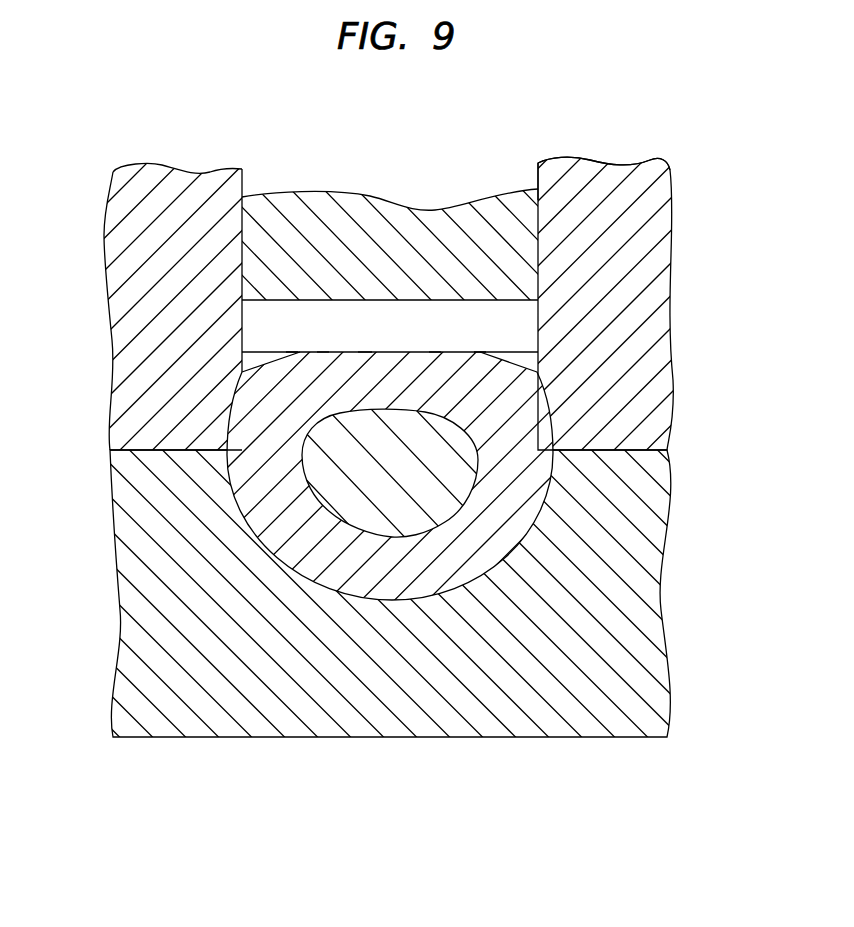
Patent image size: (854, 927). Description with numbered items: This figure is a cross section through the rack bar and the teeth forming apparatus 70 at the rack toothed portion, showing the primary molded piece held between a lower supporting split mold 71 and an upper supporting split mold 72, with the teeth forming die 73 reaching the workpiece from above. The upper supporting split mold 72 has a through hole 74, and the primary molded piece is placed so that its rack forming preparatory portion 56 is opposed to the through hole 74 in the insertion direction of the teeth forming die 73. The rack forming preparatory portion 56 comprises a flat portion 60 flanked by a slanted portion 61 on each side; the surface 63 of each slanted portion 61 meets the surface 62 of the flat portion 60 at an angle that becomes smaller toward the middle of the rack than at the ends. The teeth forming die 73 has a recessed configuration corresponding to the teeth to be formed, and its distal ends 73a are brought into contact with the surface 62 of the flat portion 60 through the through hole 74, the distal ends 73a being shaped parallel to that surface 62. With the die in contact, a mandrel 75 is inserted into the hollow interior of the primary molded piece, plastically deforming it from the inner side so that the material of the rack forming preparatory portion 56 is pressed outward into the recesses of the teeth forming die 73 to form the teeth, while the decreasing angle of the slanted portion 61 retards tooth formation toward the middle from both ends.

The teeth forming apparatus 70 is at (622, 165).
The lower supporting split mold 71 is at (658, 531).
The upper supporting split mold 72 is at (177, 183).
The teeth forming die 73 is at (403, 208).
The distal ends of the teeth forming die 73a is at (242, 359).
The through hole 74 is at (540, 172).
The mandrel 75 is at (417, 520).
The rack forming preparatory portion 56 is at (324, 349).
The flat portion 60 is at (435, 349).
The slanted portion 61 is at (291, 349).
The surface of the flat portion 62 is at (366, 352).
The surface of the slanted portion 63 is at (260, 365).